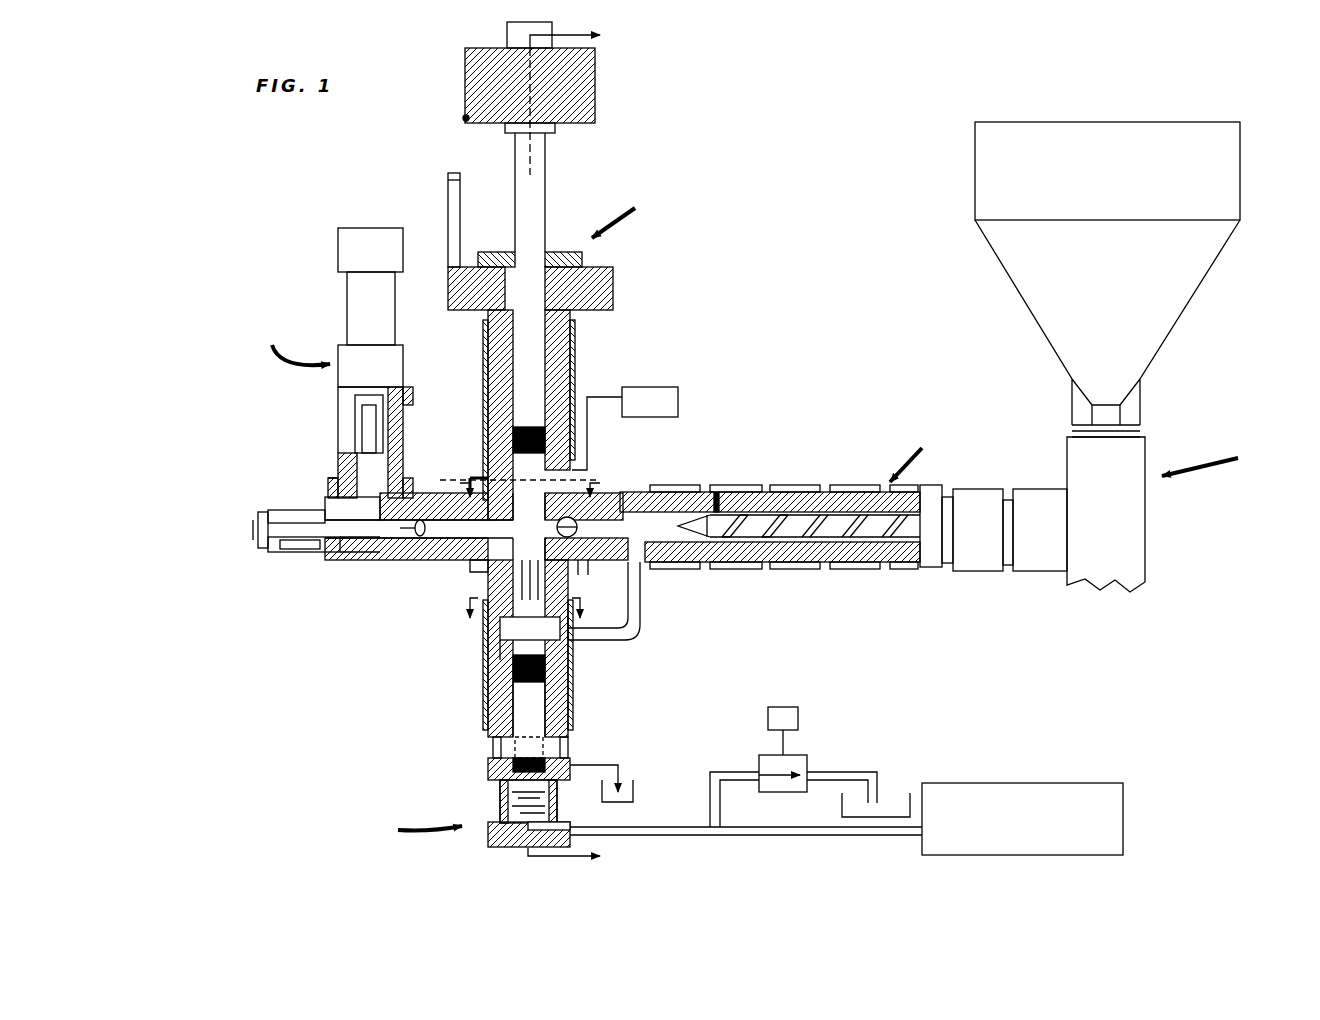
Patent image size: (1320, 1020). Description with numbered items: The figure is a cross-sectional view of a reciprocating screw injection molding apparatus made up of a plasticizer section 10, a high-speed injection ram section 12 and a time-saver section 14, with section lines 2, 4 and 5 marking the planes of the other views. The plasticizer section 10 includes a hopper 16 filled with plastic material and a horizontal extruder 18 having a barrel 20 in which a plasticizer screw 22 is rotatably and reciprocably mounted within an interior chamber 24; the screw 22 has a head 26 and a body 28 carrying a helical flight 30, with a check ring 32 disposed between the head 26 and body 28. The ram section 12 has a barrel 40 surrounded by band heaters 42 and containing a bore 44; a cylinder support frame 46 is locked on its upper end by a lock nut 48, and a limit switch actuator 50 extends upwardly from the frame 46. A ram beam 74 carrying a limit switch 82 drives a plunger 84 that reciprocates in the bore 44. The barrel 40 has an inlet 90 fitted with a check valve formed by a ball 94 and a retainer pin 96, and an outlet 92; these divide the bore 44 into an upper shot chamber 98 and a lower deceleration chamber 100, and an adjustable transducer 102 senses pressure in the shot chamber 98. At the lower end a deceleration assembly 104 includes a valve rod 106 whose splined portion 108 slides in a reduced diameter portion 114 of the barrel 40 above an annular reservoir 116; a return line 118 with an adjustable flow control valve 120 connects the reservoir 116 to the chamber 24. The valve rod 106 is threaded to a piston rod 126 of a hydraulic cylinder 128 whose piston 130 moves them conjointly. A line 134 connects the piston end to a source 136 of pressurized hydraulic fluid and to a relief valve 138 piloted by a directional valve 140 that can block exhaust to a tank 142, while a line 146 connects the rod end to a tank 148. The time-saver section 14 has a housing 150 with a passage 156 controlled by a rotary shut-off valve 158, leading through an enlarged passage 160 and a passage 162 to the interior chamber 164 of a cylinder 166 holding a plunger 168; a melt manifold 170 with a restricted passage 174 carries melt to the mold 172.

The section line 2- 2 is at (579, 446).
The section line 4- 4 is at (525, 602).
The section line 5- 5 is at (527, 485).
The plasticizer section 10 is at (1106, 514).
The high-speed injection ram section 12 is at (621, 209).
The time-saver section 14 is at (292, 342).
The hopper 16 is at (1212, 258).
The extruder 18 is at (906, 452).
The barrel 20 is at (805, 492).
The plasticizer screw 22 is at (865, 545).
The interior chamber 24 is at (665, 492).
The head 26 is at (703, 545).
The body 28 is at (803, 545).
The helical flight 30 is at (775, 492).
The check ring 32 is at (716, 492).
The barrel 40 is at (570, 370).
The band heaters 42 is at (483, 400).
The bore 44 is at (510, 488).
The cylinder support frame 46 is at (613, 280).
The lock nut 48 is at (492, 252).
The limit switch actuator 50 is at (448, 178).
The ram beam 74 is at (595, 76).
The limit switch 82 is at (466, 118).
The plunger 84 is at (540, 195).
The inlet 90 is at (588, 570).
The outlet 92 is at (470, 500).
The ball 94 is at (628, 498).
The retainer pin 96 is at (580, 527).
The shot chamber 98 is at (529, 504).
The deceleration chamber 100 is at (531, 569).
The adjustable transducer 102 is at (678, 395).
The deceleration assembly 104 is at (410, 829).
The valve rod 106 is at (570, 715).
The splined portion 108 is at (505, 627).
The reduced diameter portion 114 is at (545, 630).
The annular reservoir 116 is at (500, 628).
The return line 118 is at (622, 640).
The adjustable flow control valve 120 is at (642, 632).
The piston rod 126 is at (490, 762).
The hydraulic cylinder 128 is at (490, 840).
The piston 130 is at (500, 788).
The line 134 is at (692, 838).
The source of pressurized hydraulic fluid 136 is at (1038, 784).
The high/low pressure relief valve 138 is at (807, 758).
The directional valve 140 is at (798, 712).
The tank 142 is at (888, 792).
The line 146 is at (622, 765).
The tank 148 is at (635, 795).
The housing 150 is at (345, 560).
The passage 156 is at (472, 562).
The rotary shut-off valve 158 is at (412, 560).
The enlarged passage 160 is at (330, 550).
The passage 162 is at (338, 488).
The interior chamber 164 is at (352, 462).
The cylinder 166 is at (400, 402).
The plunger 168 is at (362, 412).
The melt manifold 170 is at (325, 505).
The mold 172 is at (262, 520).
The restricted passage 174 is at (275, 550).